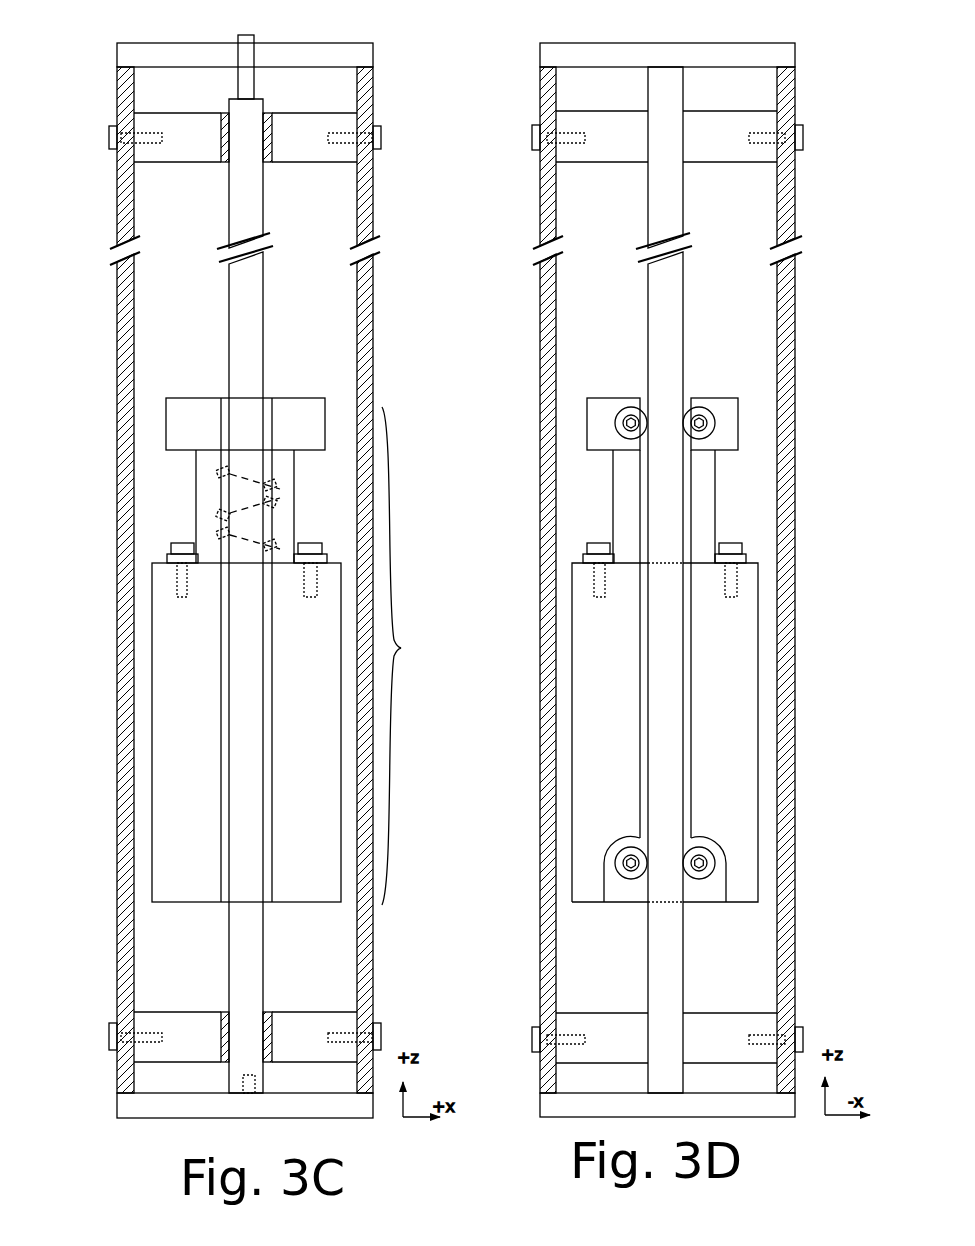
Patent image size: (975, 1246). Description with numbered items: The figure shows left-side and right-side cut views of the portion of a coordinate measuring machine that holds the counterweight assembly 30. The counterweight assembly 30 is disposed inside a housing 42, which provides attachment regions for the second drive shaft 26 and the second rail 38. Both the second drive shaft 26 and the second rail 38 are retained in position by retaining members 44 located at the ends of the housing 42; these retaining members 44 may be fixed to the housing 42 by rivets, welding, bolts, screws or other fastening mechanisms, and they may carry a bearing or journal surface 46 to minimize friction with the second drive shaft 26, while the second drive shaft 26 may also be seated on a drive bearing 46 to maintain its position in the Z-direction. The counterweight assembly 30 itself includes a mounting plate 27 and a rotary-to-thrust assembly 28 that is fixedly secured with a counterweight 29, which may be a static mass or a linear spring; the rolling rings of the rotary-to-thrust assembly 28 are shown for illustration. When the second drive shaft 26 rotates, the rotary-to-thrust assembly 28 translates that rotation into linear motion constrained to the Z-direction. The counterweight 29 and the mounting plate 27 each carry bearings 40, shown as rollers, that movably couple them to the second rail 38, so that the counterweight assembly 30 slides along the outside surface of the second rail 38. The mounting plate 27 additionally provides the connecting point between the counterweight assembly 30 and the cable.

In FIG. 3C, the second drive shaft 26 is at (236, 321).
In FIG. 3C, the mounting plate 27 is at (182, 398).
In FIG. 3D, the mounting plate 27 is at (738, 420).
In FIG. 3C, the rotary-to-thrust assembly 28 is at (196, 530).
In FIG. 3D, the rotary-to-thrust assembly 28 is at (717, 518).
In FIG. 3C, the counterweight 29 is at (152, 733).
In FIG. 3D, the counterweight 29 is at (759, 720).
In FIG. 3C, the counterweight assembly 30 is at (407, 656).
In FIG. 3D, the second rail 38 is at (657, 323).
In FIG. 3D, the bearings 40 is at (617, 423).
In FIG. 3C, the housing 42 is at (118, 473).
In FIG. 3D, the housing 42 is at (540, 620).
In FIG. 3C, the retaining members 44 is at (148, 156).
In FIG. 3D, the retaining members 44 is at (556, 120).
In FIG. 3C, the journal surface 46 is at (265, 162).